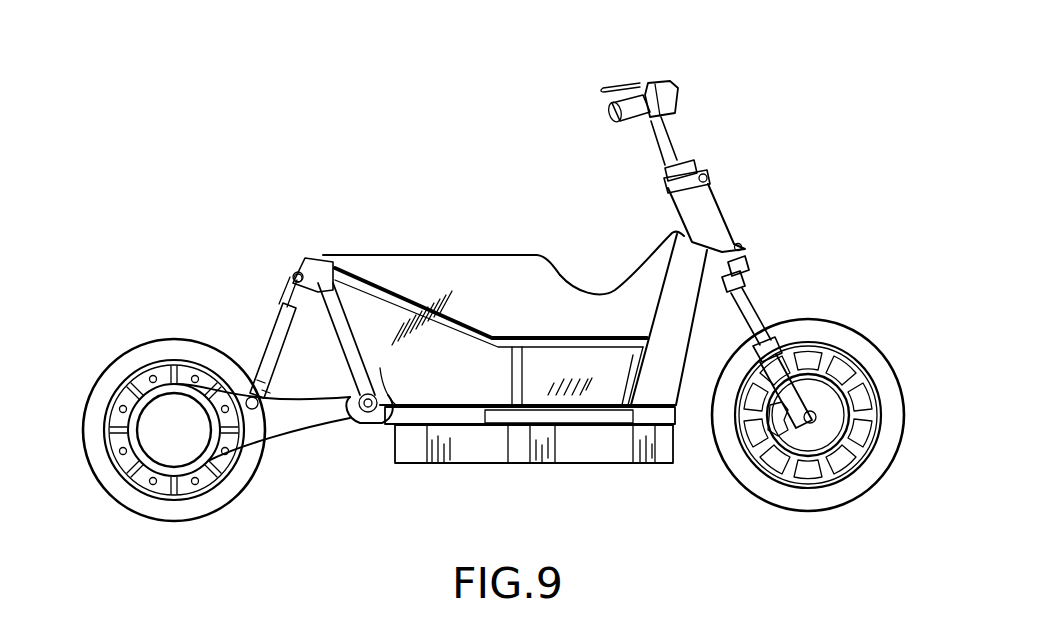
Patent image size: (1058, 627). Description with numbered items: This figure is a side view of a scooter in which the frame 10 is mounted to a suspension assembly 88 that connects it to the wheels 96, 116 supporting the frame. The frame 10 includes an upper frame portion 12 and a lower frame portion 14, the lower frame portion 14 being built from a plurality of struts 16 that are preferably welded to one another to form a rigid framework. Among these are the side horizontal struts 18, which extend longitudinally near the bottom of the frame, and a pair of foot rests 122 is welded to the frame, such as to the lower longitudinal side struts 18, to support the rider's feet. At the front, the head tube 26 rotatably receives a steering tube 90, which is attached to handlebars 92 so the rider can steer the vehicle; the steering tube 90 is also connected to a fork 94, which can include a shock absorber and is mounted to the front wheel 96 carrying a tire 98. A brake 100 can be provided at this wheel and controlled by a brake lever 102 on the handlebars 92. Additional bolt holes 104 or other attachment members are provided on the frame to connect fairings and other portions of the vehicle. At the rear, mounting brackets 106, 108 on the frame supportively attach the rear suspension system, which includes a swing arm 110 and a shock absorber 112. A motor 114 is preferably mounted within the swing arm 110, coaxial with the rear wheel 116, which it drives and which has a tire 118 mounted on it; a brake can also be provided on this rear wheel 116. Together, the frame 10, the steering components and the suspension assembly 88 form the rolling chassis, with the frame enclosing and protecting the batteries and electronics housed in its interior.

The frame 10 is at (387, 250).
The upper frame portion 12 is at (460, 280).
The lower frame portion 14 is at (398, 425).
The struts 16 is at (678, 327).
The side horizontal struts 18 is at (460, 432).
The head tube 26 is at (703, 208).
The suspension assembly 88 is at (782, 292).
The steering tube 90 is at (683, 148).
The handlebars 92 is at (647, 90).
The fork 94 is at (793, 357).
The wheel 96 is at (860, 377).
The tire 98 is at (887, 393).
The brake 100 is at (772, 420).
The brake lever 102 is at (620, 90).
The bolt holes 104 is at (708, 175).
The mounting bracket 106 is at (352, 413).
The mounting bracket 108 is at (305, 255).
The swing arm 110 is at (278, 420).
The shock absorber 112 is at (276, 330).
The motor 114 is at (175, 432).
The wheel 116 is at (163, 377).
The tire 118 is at (115, 494).
The foot rests 122 is at (588, 410).